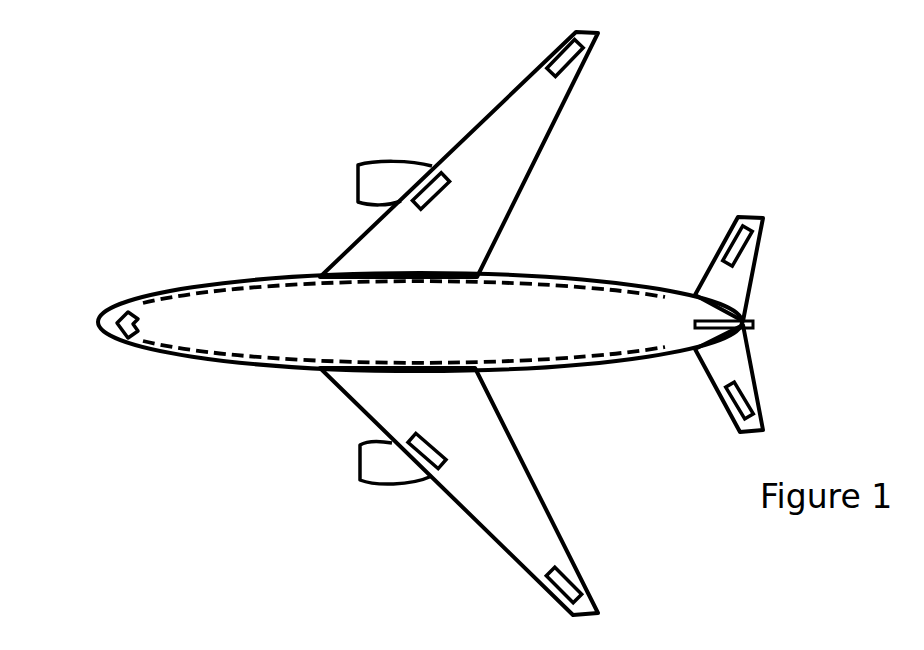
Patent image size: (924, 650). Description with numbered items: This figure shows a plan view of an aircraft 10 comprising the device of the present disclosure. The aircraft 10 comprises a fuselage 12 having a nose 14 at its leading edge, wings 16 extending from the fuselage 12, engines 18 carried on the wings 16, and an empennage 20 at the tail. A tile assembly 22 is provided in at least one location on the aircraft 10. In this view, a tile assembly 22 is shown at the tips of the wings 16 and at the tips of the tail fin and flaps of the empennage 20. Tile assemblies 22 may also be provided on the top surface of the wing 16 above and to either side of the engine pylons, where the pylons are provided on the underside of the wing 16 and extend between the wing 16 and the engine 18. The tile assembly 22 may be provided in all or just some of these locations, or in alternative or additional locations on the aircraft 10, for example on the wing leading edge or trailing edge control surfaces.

The aircraft 10 is at (106, 122).
The fuselage 12 is at (236, 305).
The nose 14 is at (97, 323).
The wings 16 is at (527, 165).
The engines 18 is at (380, 180).
The empennage 20 is at (747, 275).
The tile assembly 22 is at (428, 175).